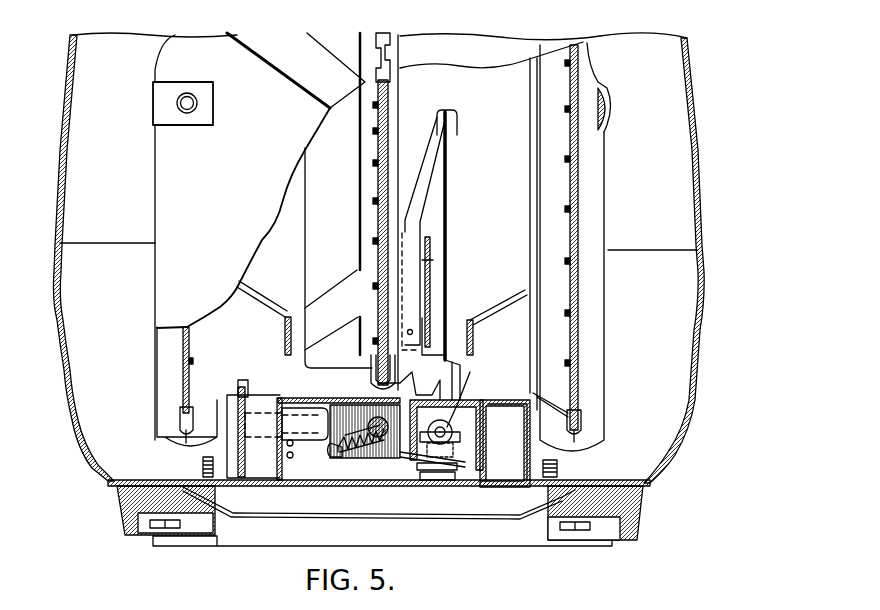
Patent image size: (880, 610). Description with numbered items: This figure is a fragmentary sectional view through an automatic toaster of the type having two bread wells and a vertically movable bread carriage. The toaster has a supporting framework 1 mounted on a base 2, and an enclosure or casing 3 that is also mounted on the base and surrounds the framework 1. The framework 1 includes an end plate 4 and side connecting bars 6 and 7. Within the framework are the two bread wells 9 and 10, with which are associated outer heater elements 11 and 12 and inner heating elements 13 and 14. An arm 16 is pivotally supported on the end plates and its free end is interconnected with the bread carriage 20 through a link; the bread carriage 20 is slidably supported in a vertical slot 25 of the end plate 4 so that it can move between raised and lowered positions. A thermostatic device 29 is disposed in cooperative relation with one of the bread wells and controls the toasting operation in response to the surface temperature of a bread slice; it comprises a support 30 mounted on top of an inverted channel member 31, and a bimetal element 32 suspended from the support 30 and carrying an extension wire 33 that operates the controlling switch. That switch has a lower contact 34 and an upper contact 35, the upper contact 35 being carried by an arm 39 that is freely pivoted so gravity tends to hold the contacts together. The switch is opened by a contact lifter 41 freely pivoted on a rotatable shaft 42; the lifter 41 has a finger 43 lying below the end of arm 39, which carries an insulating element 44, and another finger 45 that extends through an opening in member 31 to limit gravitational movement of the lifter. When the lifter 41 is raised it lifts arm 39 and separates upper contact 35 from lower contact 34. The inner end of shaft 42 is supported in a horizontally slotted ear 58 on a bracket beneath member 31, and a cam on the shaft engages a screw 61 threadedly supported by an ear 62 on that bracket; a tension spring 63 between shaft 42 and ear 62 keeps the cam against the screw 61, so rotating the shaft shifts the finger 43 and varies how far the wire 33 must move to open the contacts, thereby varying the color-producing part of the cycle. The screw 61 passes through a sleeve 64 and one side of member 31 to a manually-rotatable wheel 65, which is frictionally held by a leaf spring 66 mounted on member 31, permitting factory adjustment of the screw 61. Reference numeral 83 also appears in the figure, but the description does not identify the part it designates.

The supporting framework 1 is at (231, 187).
The base 2 is at (645, 504).
The enclosure or casing 3 is at (699, 184).
The end plate 4 is at (170, 164).
The side connecting bar 6 is at (163, 100).
The side connecting bar 7 is at (613, 104).
The bread well 9 is at (278, 256).
The bread well 10 is at (497, 247).
The outer heater element 11 is at (192, 360).
The outer heater element 12 is at (570, 215).
The inner heating element 13 is at (376, 162).
The inner heating element 14 is at (389, 110).
The arm 16 is at (285, 62).
The bread carriage 20 is at (283, 305).
The vertical slot 25 is at (392, 35).
The thermostatic device 29 is at (432, 188).
The support 30 is at (455, 124).
The inverted channel member 31 is at (470, 385).
The bimetal element 32 is at (449, 160).
The extension wire 33 is at (448, 280).
The lower contact 34 is at (467, 462).
The upper contact 35 is at (471, 445).
The arm 39 is at (452, 430).
The contact lifter 41 is at (390, 457).
The shaft 42 is at (377, 455).
The finger 43 is at (443, 470).
The insulating element 44 is at (462, 400).
The finger 45 is at (428, 386).
The ear 58 is at (383, 460).
The screw 61 is at (333, 398).
The ear 62 is at (322, 396).
The tension spring 63 is at (340, 457).
The sleeve 64 is at (312, 432).
The manually-rotatable wheel 65 is at (243, 380).
The leaf spring 66 is at (263, 430).
The terminal screw 83 is at (290, 458).